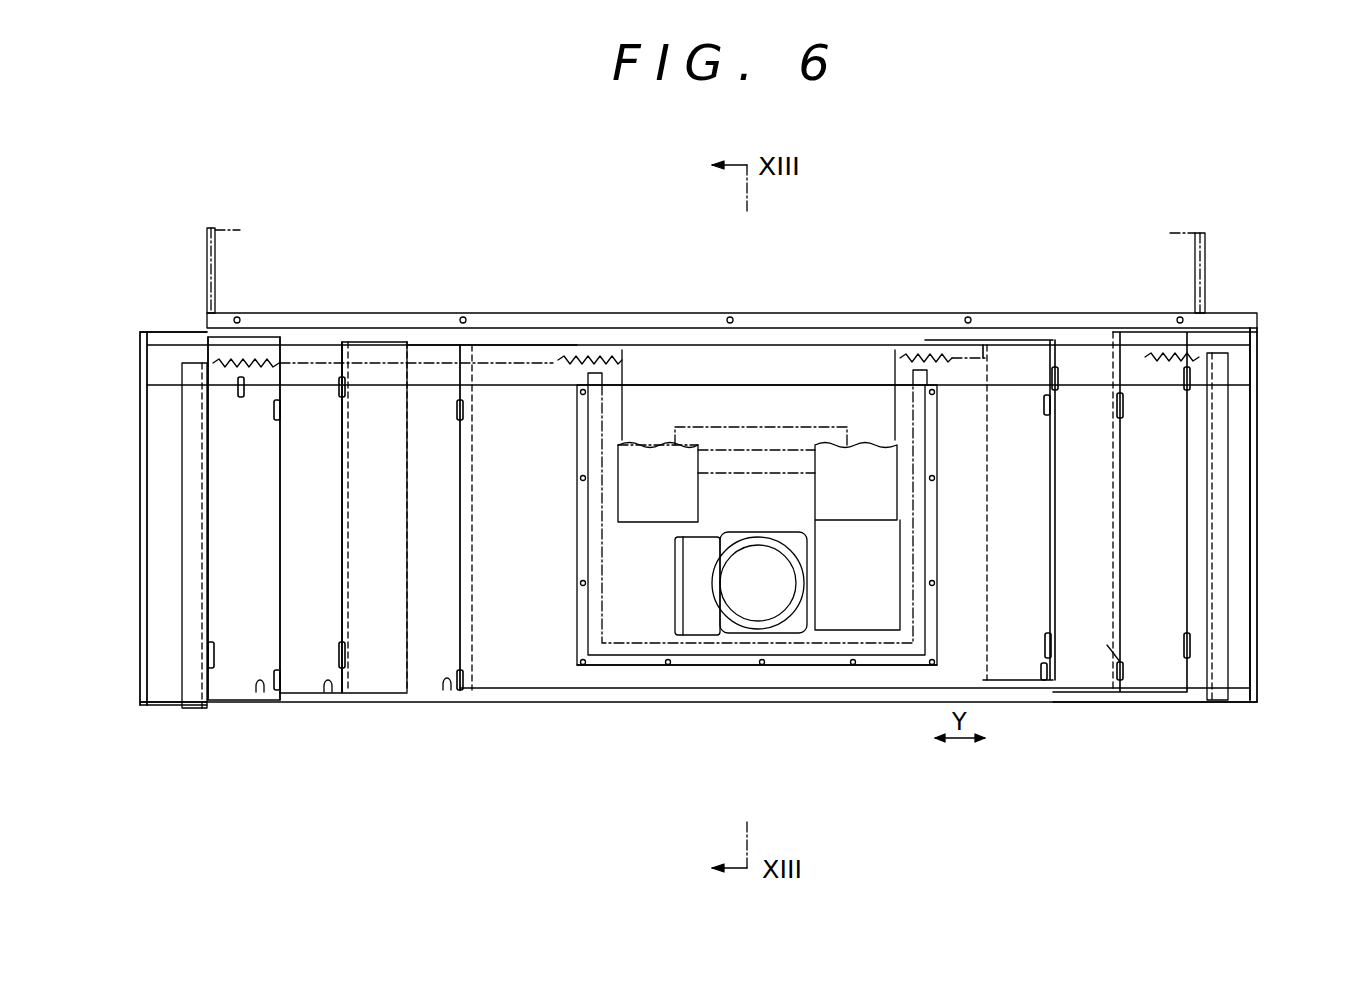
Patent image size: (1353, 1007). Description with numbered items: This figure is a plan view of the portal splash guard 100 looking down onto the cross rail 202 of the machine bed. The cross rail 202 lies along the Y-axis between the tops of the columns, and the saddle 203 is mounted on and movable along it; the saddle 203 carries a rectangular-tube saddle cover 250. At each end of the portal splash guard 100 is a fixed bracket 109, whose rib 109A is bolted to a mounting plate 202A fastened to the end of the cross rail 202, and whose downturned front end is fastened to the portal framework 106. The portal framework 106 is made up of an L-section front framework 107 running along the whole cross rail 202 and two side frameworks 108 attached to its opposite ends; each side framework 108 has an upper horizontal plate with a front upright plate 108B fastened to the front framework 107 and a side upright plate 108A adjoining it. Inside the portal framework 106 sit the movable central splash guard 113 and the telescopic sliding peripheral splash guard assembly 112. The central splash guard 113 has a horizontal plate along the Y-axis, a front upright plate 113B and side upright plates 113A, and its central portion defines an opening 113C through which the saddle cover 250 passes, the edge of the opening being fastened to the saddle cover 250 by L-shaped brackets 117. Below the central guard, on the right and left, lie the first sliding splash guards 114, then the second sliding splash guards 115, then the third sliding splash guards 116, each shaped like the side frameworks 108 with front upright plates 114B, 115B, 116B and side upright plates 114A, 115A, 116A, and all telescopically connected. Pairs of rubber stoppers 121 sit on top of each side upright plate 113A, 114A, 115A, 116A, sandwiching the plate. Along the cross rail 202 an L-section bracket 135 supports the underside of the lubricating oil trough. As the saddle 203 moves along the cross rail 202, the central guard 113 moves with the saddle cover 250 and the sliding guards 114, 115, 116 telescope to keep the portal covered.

The portal splash guard 100 is at (631, 285).
The portal framework 106 is at (234, 832).
The front framework 107 is at (168, 705).
The side framework 108 is at (157, 677).
The side upright plate 108A is at (1255, 617).
The front upright plate 108B is at (1273, 678).
The fixed bracket 109 is at (200, 484).
The rib 109A is at (205, 610).
The telescopic sliding peripheral splash guard assembly 112 is at (435, 512).
The movable central splash guard 113 is at (668, 668).
The side upright plate 113A is at (460, 590).
The front upright plate 113B is at (790, 675).
The opening 113C is at (590, 540).
The first sliding splash guard 114 is at (397, 665).
The side upright plate 114A is at (340, 585).
The front upright plate 114B is at (447, 690).
The second sliding splash guard 115 is at (298, 682).
The side upright plate 115A is at (283, 480).
The front upright plate 115B is at (330, 692).
The third sliding splash guard 116 is at (233, 665).
The side upright plate 116A is at (208, 556).
The front upright plate 116B is at (262, 692).
The L-shaped bracket 117 is at (878, 662).
The stopper 121 is at (276, 670).
The bracket 135 is at (812, 312).
The cross rail 202 is at (228, 250).
The mounting plate 202A is at (212, 290).
The saddle 203 is at (871, 415).
The saddle cover 250 is at (923, 415).